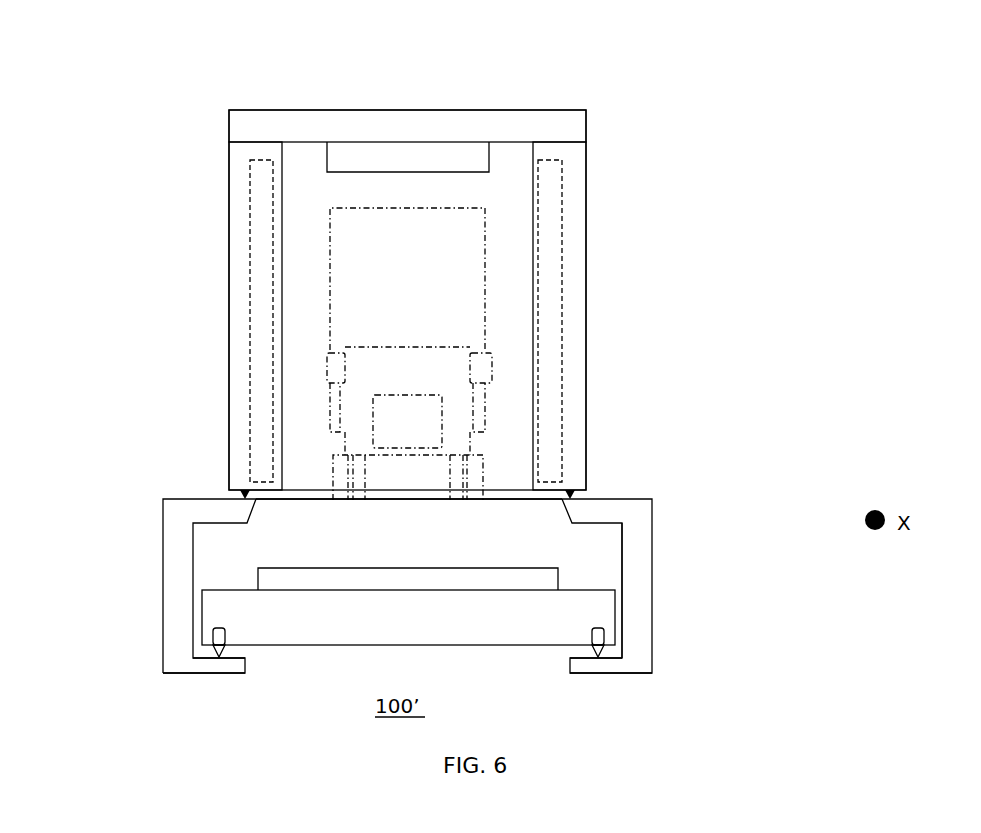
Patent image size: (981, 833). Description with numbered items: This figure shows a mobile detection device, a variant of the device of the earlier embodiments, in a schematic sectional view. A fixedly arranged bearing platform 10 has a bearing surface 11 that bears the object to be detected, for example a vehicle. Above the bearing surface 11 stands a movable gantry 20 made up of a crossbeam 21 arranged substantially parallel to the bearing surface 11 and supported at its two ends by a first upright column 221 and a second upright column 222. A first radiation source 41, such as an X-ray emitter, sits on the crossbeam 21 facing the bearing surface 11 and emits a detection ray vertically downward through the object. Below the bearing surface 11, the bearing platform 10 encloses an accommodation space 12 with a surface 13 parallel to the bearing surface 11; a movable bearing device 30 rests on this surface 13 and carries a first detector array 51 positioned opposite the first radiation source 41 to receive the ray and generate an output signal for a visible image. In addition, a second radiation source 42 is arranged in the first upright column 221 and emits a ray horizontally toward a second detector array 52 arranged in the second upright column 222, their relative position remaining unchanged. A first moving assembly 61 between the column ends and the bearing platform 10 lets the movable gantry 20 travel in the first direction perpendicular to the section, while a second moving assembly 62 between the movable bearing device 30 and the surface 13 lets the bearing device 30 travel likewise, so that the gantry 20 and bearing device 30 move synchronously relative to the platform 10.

The bearing platform 10 is at (638, 547).
The bearing surface 11 is at (510, 498).
The accommodation space 12 is at (602, 570).
The surface bearing the movable bearing device 13 is at (620, 660).
The movable gantry 20 is at (596, 245).
The crossbeam 21 is at (402, 110).
The first upright column 221 is at (230, 345).
The second upright column 222 is at (570, 368).
The movable bearing device 30 is at (262, 623).
The first radiation source 41 is at (452, 148).
The second radiation source 42 is at (250, 240).
The first detector array 51 is at (323, 570).
The second detector array 52 is at (565, 197).
The first moving assembly 61 is at (245, 492).
The second moving assembly 62 is at (213, 642).